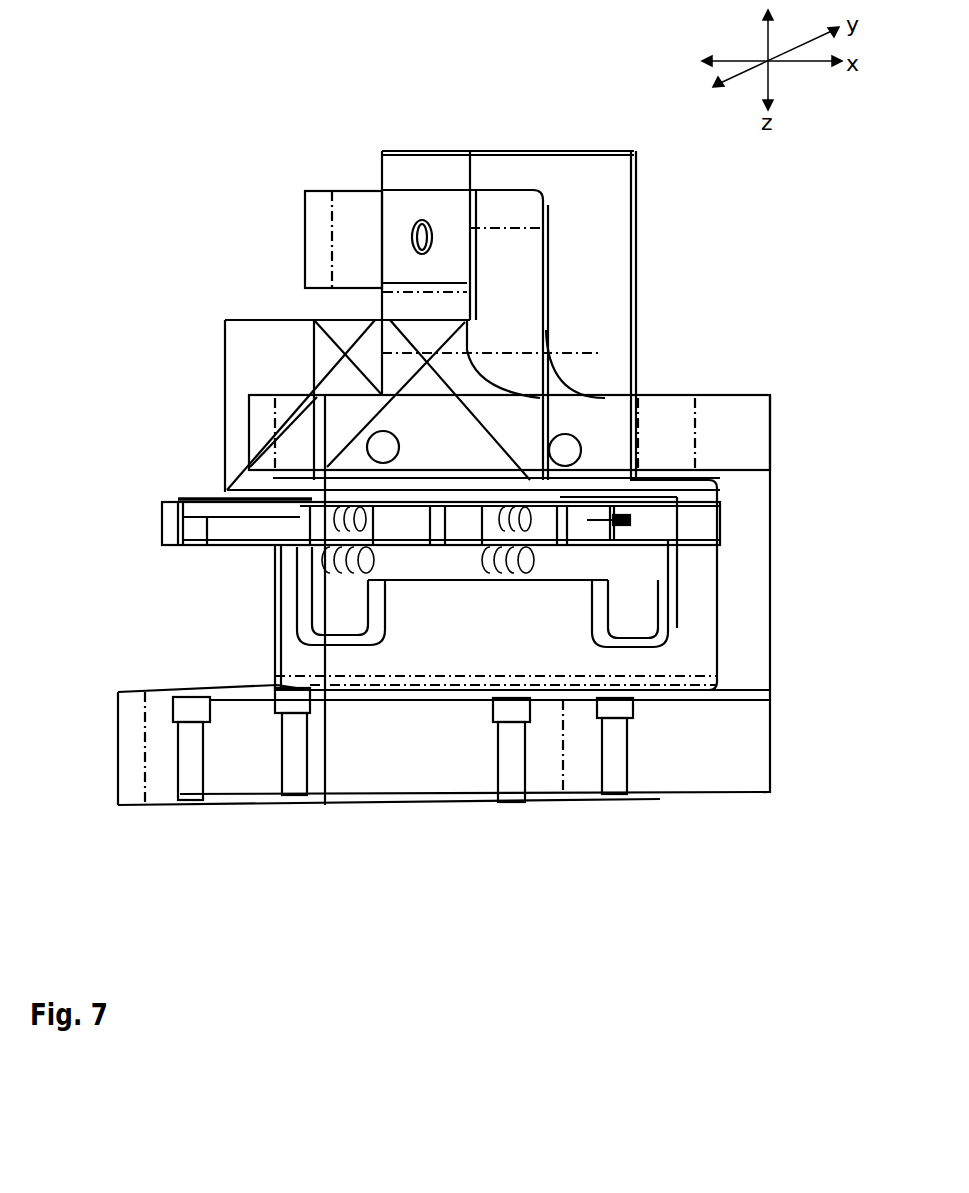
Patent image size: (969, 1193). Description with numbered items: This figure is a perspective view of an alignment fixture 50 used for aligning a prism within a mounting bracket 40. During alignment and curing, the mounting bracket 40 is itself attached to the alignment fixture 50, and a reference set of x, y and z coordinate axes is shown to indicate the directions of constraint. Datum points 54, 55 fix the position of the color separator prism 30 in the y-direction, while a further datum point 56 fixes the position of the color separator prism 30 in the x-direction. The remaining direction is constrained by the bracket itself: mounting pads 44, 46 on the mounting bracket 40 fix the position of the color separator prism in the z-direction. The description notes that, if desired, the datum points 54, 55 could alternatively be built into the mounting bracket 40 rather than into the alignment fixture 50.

The color separator prism 30 is at (632, 210).
The mounting bracket 40 is at (210, 493).
The mounting pad 44 is at (410, 507).
The mounting pad 46 is at (628, 521).
The alignment fixture 50 is at (177, 803).
The datum point 54 is at (368, 415).
The datum point 55 is at (560, 435).
The datum point 56 is at (424, 219).